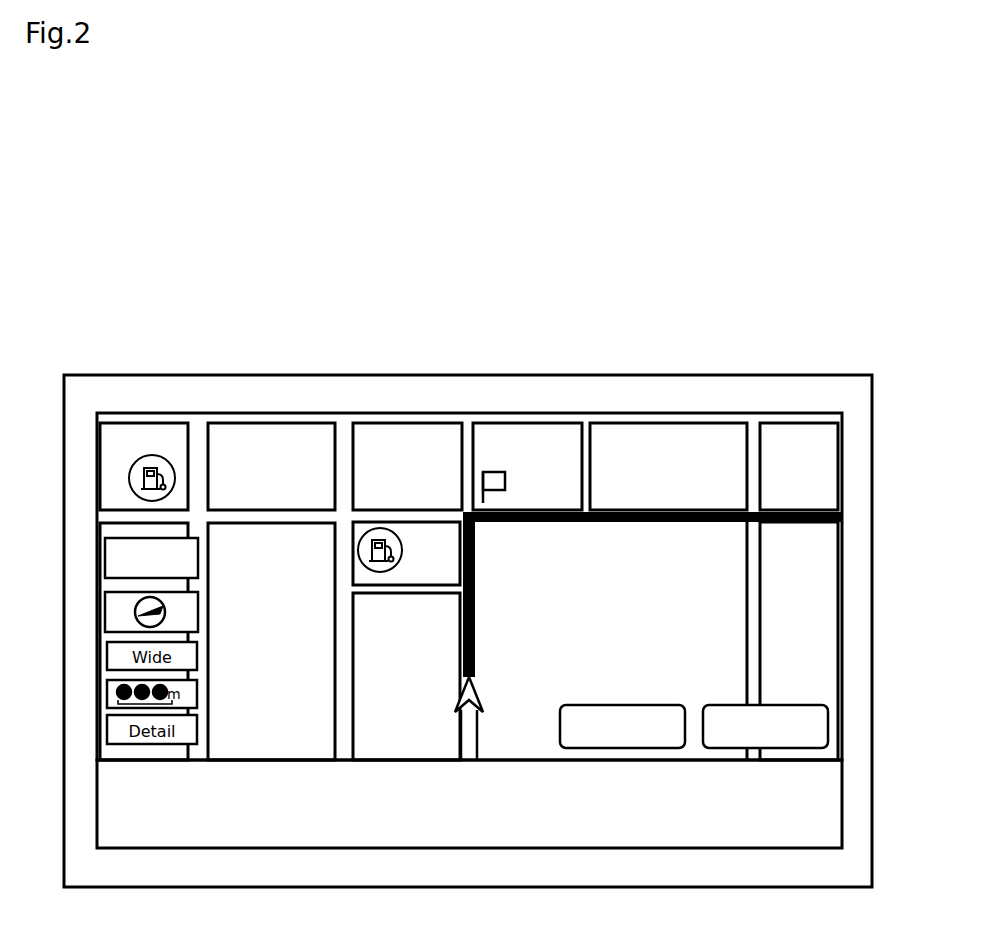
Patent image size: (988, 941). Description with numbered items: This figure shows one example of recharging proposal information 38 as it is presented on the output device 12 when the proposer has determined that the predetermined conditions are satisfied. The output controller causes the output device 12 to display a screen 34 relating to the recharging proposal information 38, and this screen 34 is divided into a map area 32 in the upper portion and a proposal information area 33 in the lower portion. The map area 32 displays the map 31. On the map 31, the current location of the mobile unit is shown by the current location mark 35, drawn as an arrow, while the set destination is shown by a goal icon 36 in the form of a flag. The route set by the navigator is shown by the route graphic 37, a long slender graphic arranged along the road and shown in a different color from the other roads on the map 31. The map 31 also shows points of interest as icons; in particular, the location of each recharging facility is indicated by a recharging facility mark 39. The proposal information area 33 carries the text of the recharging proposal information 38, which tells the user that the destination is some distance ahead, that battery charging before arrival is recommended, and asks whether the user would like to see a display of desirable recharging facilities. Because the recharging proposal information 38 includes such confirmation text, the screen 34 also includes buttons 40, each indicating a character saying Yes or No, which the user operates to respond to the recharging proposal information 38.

The output device 12 is at (699, 283).
The map 31 is at (247, 413).
The map area 32 is at (55, 413).
The proposal information area 33 is at (55, 770).
The screen 34 is at (635, 413).
The current location mark 35 is at (455, 690).
The goal icon 36 is at (494, 470).
The route graphic 37 is at (703, 512).
The recharging proposal information 38 is at (118, 850).
The recharging facility mark 39 is at (146, 455).
The button 40 is at (627, 705).